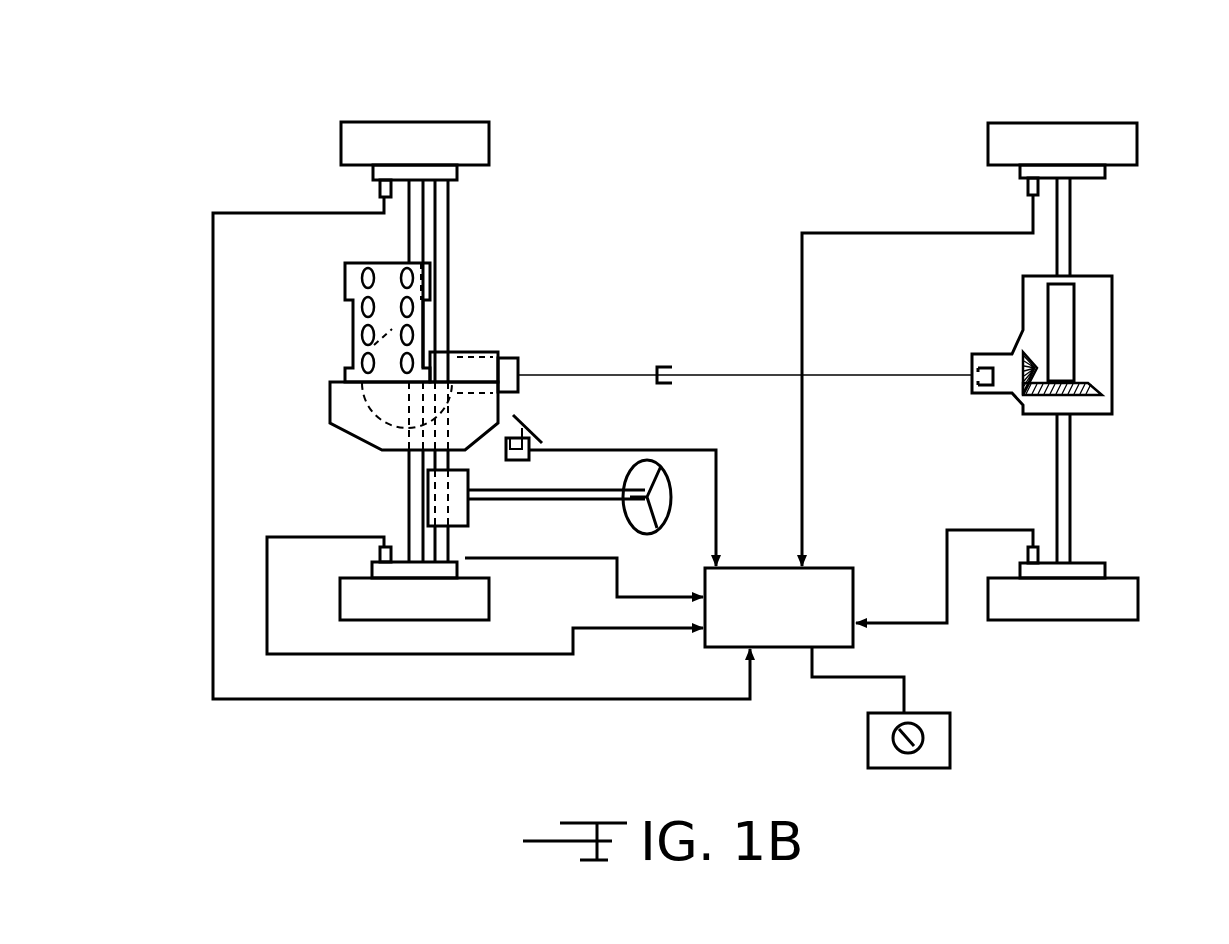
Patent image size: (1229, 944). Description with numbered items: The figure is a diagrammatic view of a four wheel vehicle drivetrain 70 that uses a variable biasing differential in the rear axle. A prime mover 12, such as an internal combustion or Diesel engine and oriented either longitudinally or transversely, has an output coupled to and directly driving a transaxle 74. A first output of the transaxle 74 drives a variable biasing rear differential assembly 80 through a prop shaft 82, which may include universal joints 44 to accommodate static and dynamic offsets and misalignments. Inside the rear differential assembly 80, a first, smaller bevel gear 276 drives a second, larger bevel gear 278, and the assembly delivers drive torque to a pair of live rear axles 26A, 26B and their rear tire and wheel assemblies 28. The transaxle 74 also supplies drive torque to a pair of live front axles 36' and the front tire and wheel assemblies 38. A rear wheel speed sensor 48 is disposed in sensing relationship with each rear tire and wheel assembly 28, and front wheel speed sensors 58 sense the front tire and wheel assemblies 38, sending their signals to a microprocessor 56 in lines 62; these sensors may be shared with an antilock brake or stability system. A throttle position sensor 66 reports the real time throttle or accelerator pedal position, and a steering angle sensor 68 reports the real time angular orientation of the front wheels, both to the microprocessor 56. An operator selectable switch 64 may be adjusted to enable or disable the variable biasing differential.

The prime mover 12 is at (352, 277).
The left rear axle 26A is at (1070, 490).
The rear axle 26B is at (1065, 222).
The rear tire and wheel assemblies 28 is at (1065, 120).
The front axles 36' is at (346, 371).
The front tire and wheel assemblies 38 is at (419, 119).
The universal joints 44 is at (665, 366).
The rear wheel speed sensor 48 is at (1027, 190).
The microprocessor 56 is at (790, 647).
The front wheel speed sensors 58 is at (378, 190).
The lines 62 is at (213, 513).
The operator selectable switch 64 is at (953, 738).
The throttle position sensor 66 is at (517, 460).
The steering angle sensor 68 is at (470, 519).
The four wheel vehicle drivetrain 70 is at (714, 184).
The transaxle 74 is at (352, 424).
The variable biasing rear differential assembly 80 is at (1140, 340).
The prop shaft 82 is at (708, 370).
The first, smaller bevel gear 276 is at (1020, 382).
The second, larger bevel gear 278 is at (1080, 395).